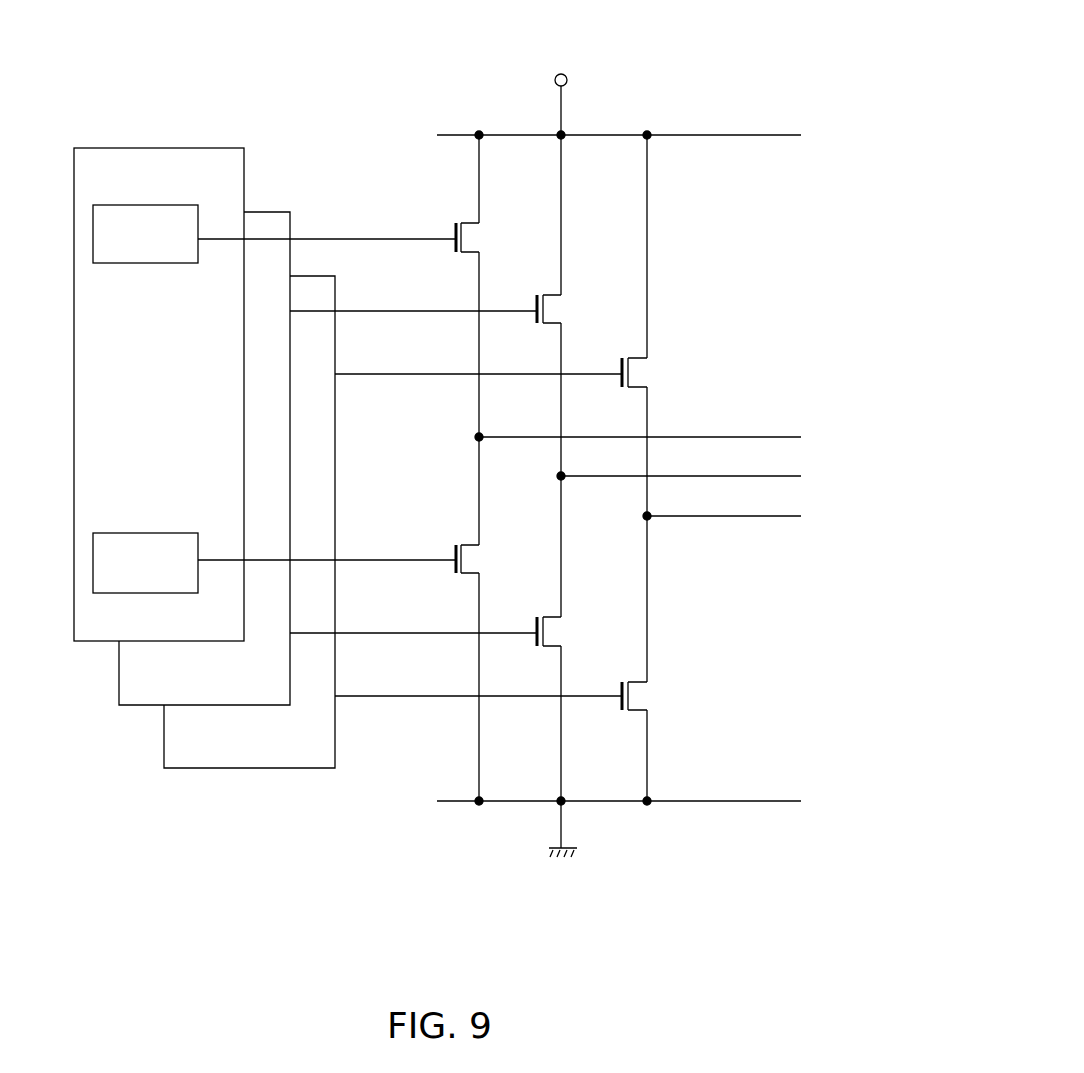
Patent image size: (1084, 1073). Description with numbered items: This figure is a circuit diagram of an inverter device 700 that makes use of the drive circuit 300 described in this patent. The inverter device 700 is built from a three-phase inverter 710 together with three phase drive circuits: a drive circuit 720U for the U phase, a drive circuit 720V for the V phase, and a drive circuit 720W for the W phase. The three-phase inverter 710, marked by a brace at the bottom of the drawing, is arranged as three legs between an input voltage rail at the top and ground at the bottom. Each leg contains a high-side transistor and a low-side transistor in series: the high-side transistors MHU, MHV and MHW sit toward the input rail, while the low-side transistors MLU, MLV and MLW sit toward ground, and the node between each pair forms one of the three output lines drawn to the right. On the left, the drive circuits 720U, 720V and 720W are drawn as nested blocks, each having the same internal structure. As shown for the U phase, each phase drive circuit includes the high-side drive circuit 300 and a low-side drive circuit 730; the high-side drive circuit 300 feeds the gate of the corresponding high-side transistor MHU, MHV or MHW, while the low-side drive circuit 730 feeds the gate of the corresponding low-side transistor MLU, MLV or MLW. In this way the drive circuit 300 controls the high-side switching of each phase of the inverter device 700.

The inverter device 700 is at (785, 80).
The three-phase inverter 710 is at (660, 878).
The drive circuit of U phase 720U is at (160, 148).
The drive circuit of V phase 720V is at (262, 212).
The drive circuit of W phase 720W is at (337, 290).
The drive circuit 300 is at (148, 205).
The low-side drive circuit 730 is at (137, 533).
The high-side transistor MHU is at (492, 232).
The high-side transistor MHV is at (578, 302).
The high-side transistor MHW is at (658, 365).
The low-side transistor MLU is at (492, 575).
The low-side transistor MLV is at (578, 635).
The low-side transistor MLW is at (658, 702).